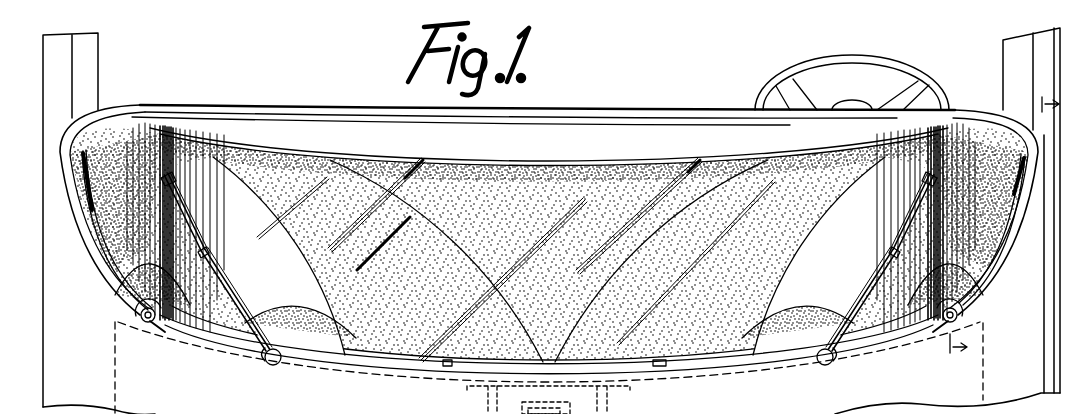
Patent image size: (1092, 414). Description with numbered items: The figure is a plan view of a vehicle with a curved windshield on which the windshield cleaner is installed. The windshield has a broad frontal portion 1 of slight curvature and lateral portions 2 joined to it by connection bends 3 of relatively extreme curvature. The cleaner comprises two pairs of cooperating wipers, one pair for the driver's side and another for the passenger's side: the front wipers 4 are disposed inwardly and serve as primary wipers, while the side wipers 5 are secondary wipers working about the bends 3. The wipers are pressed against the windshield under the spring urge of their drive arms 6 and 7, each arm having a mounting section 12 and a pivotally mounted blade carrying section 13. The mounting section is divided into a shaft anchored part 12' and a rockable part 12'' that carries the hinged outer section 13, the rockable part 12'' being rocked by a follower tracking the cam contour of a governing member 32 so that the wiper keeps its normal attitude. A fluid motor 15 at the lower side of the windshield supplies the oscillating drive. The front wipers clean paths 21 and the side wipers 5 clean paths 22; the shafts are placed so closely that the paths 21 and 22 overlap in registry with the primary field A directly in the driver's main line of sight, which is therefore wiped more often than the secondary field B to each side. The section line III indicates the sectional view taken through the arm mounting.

The broad frontal portion 1 is at (534, 209).
The lateral portions 2 is at (76, 143).
The connection bends 3 is at (176, 130).
The wiping elements 4 is at (211, 226).
The wiping elements 5 is at (84, 188).
The drive arms 6 is at (247, 318).
The drive arms 7 is at (111, 287).
The mounting section 12 is at (518, 375).
The shaft anchored part 12' is at (553, 333).
The rockable part 12'' is at (562, 311).
The blade carrying section 13 is at (112, 256).
The fluid motor 15 is at (483, 412).
The paths 21 is at (462, 262).
The paths 22 is at (118, 140).
The governing member 32 is at (163, 326).
The primary field A is at (293, 275).
The secondary field B is at (354, 261).
The section line III is at (1011, 241).